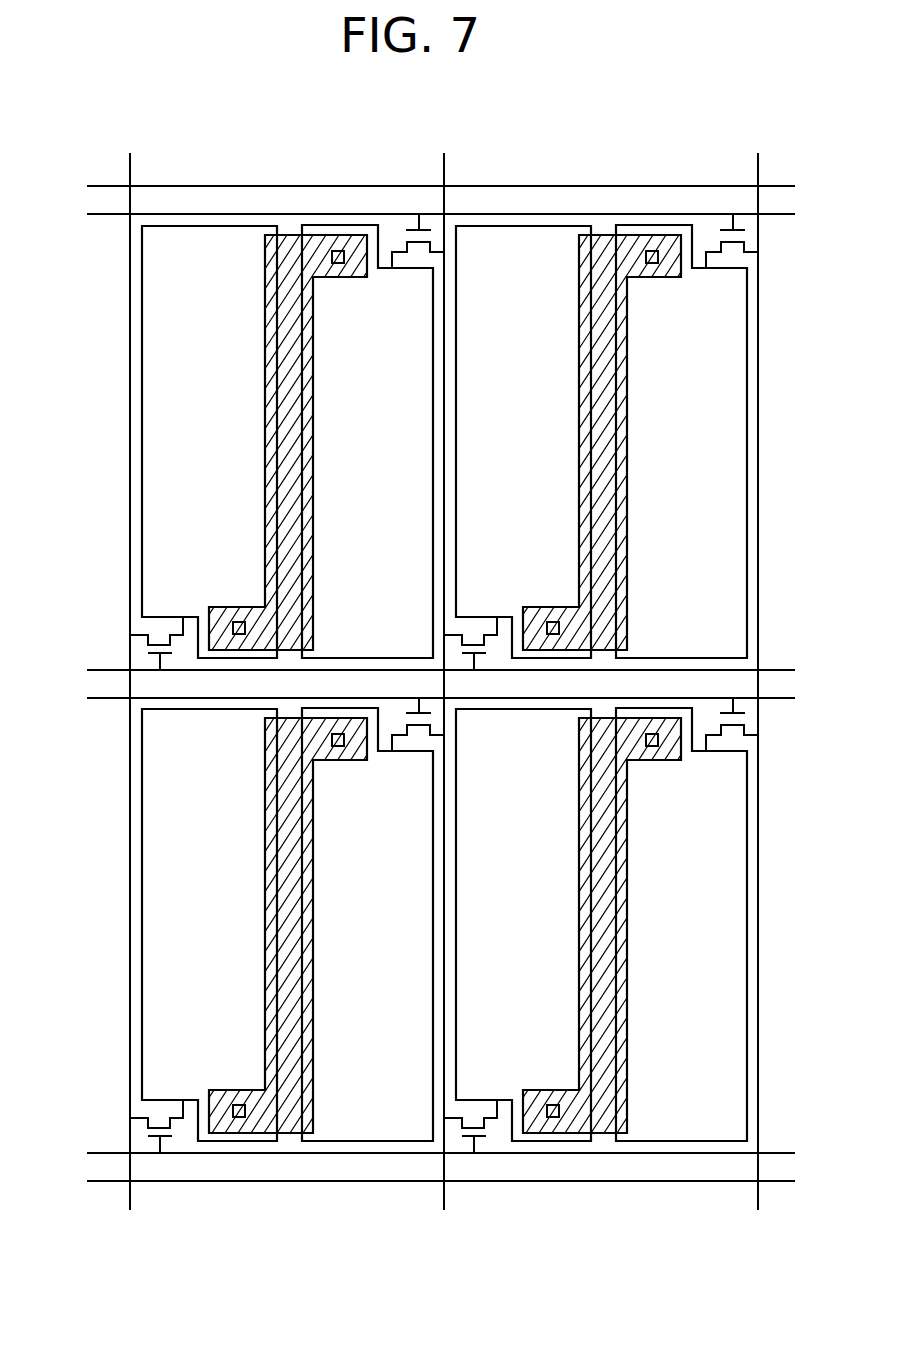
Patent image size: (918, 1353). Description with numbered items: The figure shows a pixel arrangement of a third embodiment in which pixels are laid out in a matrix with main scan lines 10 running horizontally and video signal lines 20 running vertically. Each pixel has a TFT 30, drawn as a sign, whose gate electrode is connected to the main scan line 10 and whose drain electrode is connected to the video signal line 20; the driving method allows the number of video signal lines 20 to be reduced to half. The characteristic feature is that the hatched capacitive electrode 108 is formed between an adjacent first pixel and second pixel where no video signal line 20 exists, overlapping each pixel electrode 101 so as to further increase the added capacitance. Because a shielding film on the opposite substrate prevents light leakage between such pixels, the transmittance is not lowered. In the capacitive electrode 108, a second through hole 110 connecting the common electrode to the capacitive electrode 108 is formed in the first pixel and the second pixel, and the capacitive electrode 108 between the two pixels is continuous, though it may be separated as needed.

The main scan line 10 is at (118, 186).
The video signal line 20 is at (130, 322).
The pixel electrode 101 is at (173, 425).
The capacitive electrode 108 is at (327, 234).
The second through hole 110 is at (339, 256).
The TFT 30 is at (147, 645).